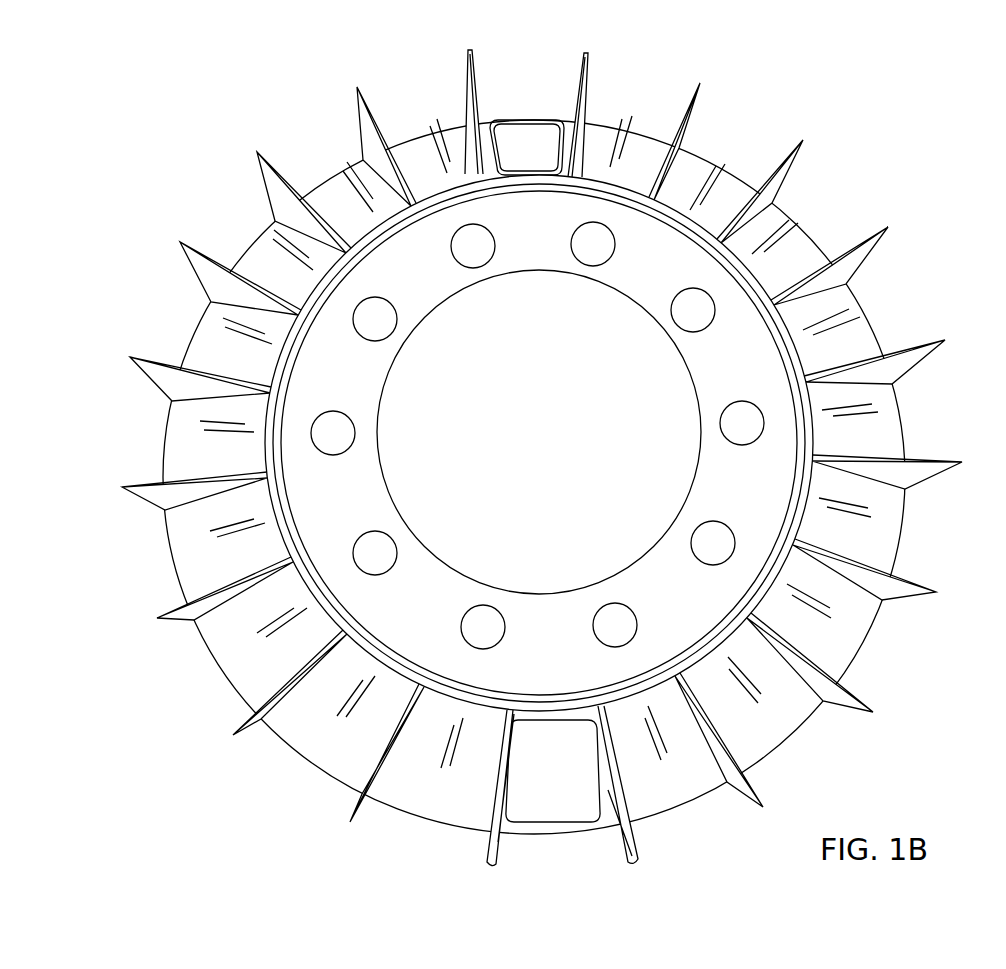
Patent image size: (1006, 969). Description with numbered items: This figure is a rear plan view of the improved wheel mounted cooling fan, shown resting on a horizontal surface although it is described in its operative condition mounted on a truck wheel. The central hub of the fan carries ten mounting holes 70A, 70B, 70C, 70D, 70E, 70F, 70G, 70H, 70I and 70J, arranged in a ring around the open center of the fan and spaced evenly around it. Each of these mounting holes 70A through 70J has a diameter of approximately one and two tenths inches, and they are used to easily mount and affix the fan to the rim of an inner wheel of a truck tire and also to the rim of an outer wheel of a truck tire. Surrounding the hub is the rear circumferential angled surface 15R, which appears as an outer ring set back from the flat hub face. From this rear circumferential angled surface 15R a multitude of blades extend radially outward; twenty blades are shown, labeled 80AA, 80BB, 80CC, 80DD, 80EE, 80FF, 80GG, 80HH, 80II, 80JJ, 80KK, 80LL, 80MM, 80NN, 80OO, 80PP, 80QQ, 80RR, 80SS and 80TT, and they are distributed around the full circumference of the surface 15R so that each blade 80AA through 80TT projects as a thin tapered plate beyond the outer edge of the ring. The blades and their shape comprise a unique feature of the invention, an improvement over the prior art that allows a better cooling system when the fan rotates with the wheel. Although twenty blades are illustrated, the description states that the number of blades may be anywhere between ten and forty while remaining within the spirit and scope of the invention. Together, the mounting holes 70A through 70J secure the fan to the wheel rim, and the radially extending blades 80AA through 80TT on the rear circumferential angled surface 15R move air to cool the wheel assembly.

The rear circumferential angled surface 15R is at (797, 240).
The mounting hole 70A is at (590, 266).
The mounting hole 70B is at (682, 322).
The mounting hole 70C is at (720, 424).
The mounting hole 70D is at (700, 533).
The mounting hole 70E is at (607, 614).
The mounting hole 70F is at (483, 612).
The mounting hole 70G is at (390, 546).
The mounting hole 70H is at (357, 433).
The mounting hole 70I is at (388, 330).
The mounting hole 70J is at (474, 266).
The blade 80AA is at (693, 117).
The blade 80BB is at (797, 160).
The blade 80CC is at (867, 253).
The blade 80DD is at (945, 378).
The blade 80EE is at (927, 485).
The blade 80FF is at (899, 603).
The blade 80GG is at (846, 716).
The blade 80HH is at (742, 796).
The blade 80II is at (620, 843).
The blade 80JJ is at (486, 838).
The blade 80KK is at (349, 818).
The blade 80LL is at (245, 740).
The blade 80MM is at (173, 625).
The blade 80NN is at (145, 502).
The blade 80OO is at (145, 377).
The blade 80PP is at (193, 266).
The blade 80QQ is at (265, 177).
The blade 80RR is at (360, 122).
The blade 80SS is at (462, 100).
The blade 80TT is at (574, 100).